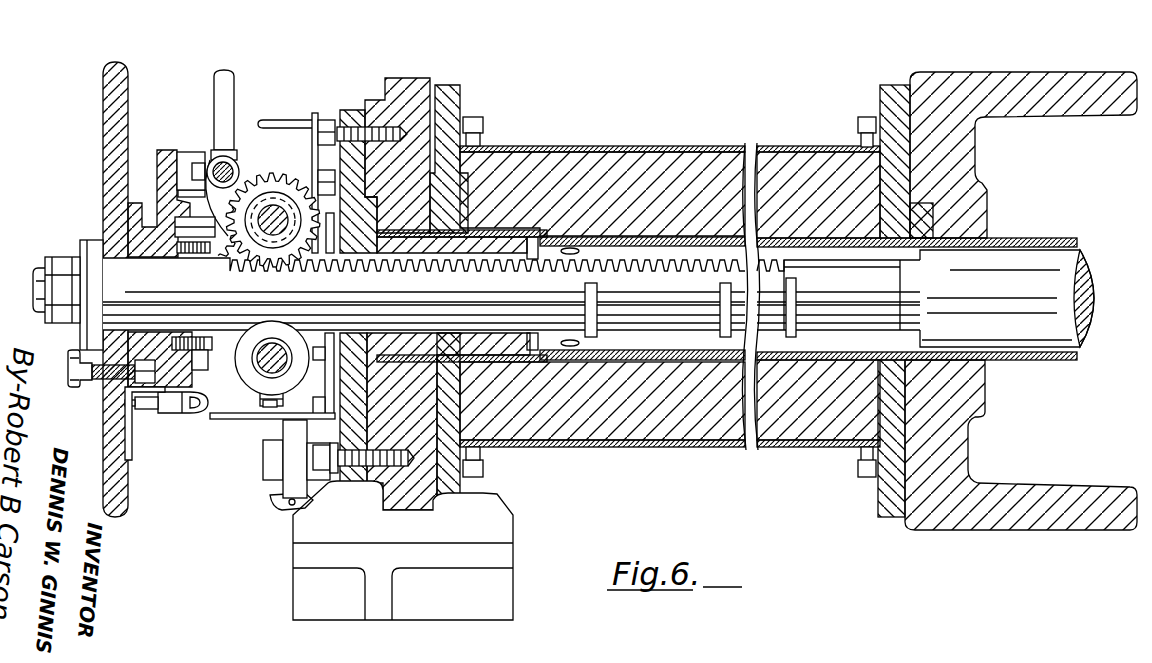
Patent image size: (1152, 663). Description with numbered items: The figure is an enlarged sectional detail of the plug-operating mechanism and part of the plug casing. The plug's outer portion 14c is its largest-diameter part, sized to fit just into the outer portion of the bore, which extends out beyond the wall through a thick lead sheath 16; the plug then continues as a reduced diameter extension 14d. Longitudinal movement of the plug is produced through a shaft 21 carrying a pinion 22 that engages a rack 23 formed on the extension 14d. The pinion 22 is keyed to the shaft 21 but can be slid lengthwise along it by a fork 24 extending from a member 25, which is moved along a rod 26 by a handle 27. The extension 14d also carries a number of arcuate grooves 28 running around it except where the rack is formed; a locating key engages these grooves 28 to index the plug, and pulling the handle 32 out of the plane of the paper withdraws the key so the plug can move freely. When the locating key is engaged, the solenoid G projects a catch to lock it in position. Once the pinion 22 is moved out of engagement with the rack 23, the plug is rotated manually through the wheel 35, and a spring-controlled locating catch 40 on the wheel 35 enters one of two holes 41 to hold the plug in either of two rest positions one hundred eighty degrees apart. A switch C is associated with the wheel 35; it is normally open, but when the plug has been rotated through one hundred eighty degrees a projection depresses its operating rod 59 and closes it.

The outer portion of the plug 14c is at (1078, 267).
The reduced diameter extension of the plug 14d is at (855, 318).
The lead sheath 16 is at (598, 187).
The shaft 21 is at (249, 185).
The pinion 22 is at (275, 203).
The rack 23 is at (468, 230).
The fork 24 is at (222, 250).
The member 25 is at (218, 160).
The rod 26 is at (207, 182).
The handle 27 is at (229, 66).
The arcuate grooves 28 is at (697, 375).
The handle 32 is at (268, 120).
The wheel 35 is at (104, 118).
The spring-controlled locating catch 40 is at (78, 388).
The holes 41 is at (148, 205).
The operating rod of switch C 59 is at (143, 412).
The switch C is at (196, 418).
The solenoid G is at (283, 456).